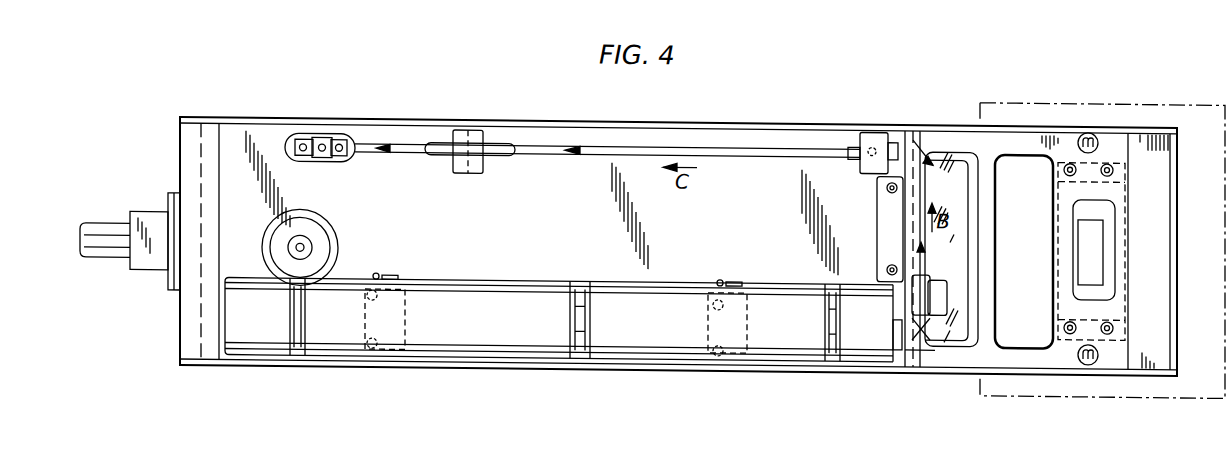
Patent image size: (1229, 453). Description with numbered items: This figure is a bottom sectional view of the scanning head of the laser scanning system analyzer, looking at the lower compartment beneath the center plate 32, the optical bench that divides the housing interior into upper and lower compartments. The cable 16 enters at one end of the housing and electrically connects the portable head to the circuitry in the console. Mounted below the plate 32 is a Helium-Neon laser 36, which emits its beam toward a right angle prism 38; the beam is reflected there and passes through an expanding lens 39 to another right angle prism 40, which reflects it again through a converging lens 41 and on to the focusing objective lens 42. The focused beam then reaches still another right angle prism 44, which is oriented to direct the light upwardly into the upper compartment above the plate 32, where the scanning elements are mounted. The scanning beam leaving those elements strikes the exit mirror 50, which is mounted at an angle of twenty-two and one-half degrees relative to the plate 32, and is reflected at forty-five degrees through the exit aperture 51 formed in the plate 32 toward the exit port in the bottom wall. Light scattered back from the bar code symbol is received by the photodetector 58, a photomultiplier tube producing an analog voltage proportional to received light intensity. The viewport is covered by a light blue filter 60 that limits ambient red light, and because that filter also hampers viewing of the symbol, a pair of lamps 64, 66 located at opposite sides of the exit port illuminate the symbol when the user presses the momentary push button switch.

The cable 16 is at (108, 231).
The center plate 32 is at (562, 227).
The laser 36 is at (632, 345).
The right angle prism 38 is at (932, 328).
The expanding lens 39 is at (940, 281).
The right angle prism 40 is at (928, 152).
The converging lens 41 is at (882, 132).
The focusing objective lens 42 is at (455, 135).
The right angle prism 44 is at (323, 133).
The exit mirror 50 is at (957, 241).
The exit aperture 51 is at (980, 194).
The photodetector 58 is at (1093, 265).
The light blue filter 60 is at (1113, 220).
The lamp 64 is at (1088, 354).
The lamp 66 is at (1088, 121).